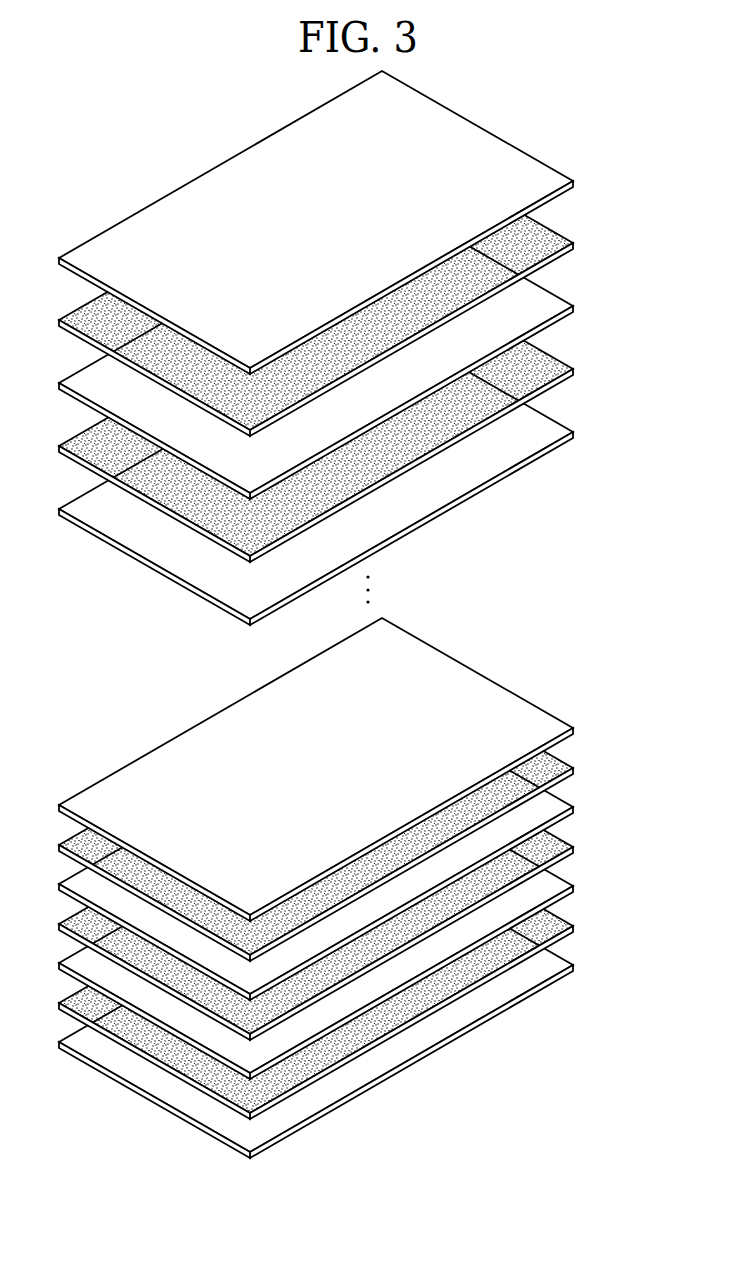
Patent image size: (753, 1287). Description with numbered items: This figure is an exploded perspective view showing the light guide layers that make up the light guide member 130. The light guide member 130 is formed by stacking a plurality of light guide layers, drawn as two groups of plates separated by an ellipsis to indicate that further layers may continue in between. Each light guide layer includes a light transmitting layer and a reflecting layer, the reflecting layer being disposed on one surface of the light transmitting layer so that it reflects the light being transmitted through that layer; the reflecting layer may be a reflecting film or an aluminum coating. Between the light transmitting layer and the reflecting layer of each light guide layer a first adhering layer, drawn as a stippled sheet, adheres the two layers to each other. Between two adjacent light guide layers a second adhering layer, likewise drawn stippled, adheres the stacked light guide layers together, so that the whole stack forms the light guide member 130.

The light guide member 130 is at (505, 88).